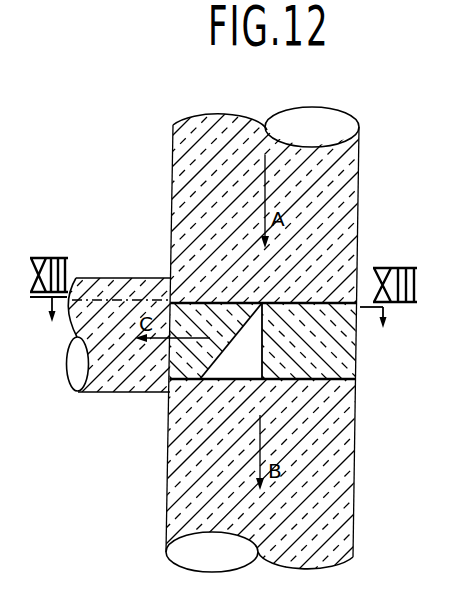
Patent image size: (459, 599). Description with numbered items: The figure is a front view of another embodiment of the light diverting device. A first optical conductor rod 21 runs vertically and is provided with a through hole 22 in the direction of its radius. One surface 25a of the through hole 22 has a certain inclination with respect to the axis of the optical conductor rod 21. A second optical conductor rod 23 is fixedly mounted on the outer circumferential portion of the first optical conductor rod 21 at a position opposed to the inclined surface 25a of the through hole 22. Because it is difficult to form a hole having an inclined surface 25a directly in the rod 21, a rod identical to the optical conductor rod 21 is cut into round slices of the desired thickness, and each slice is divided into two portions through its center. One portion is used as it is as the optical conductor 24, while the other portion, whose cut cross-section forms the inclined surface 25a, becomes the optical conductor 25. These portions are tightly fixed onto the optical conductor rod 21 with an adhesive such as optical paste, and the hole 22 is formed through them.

The first optical conductor rod 21 is at (350, 198).
The through hole 22 is at (252, 371).
The second optical conductor rod 23 is at (120, 383).
The optical conductor 24 is at (312, 306).
The optical conductor 25 is at (205, 306).
The inclined surface 25a is at (204, 366).